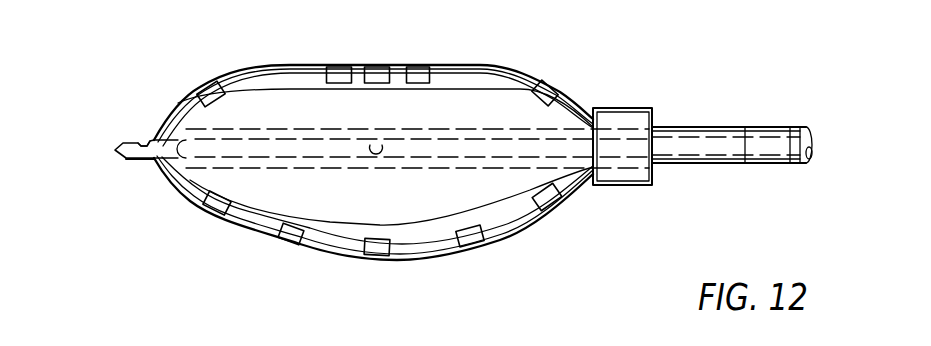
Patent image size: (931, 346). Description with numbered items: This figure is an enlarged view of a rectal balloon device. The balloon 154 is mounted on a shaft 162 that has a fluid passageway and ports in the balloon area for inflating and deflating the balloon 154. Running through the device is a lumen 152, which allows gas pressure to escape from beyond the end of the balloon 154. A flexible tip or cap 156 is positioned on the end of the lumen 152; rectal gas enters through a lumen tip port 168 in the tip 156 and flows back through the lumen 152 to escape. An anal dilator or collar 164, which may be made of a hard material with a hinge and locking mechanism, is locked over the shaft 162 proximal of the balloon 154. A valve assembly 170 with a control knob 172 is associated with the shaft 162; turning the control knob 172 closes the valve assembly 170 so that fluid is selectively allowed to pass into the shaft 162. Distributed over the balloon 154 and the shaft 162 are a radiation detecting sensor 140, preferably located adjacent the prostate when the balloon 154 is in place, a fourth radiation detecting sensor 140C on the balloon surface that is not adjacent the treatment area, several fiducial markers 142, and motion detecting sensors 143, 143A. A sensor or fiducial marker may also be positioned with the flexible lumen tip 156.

The fiducial marker 142 is at (213, 86).
The radiation detecting sensor 140 is at (377, 70).
The motion detecting sensor 143 is at (421, 70).
The balloon 154 is at (499, 84).
The anal dilator or collar 164 is at (627, 118).
The shaft 162 is at (727, 127).
The lumen 152 is at (788, 127).
The lumen tip port 168 is at (142, 142).
The flexible tip 156 is at (122, 153).
The fourth radiation detecting sensor 140C is at (283, 243).
The motion detecting sensor 143A is at (473, 246).
The control knob 172 is at (377, 157).
The valve assembly 170 is at (495, 158).